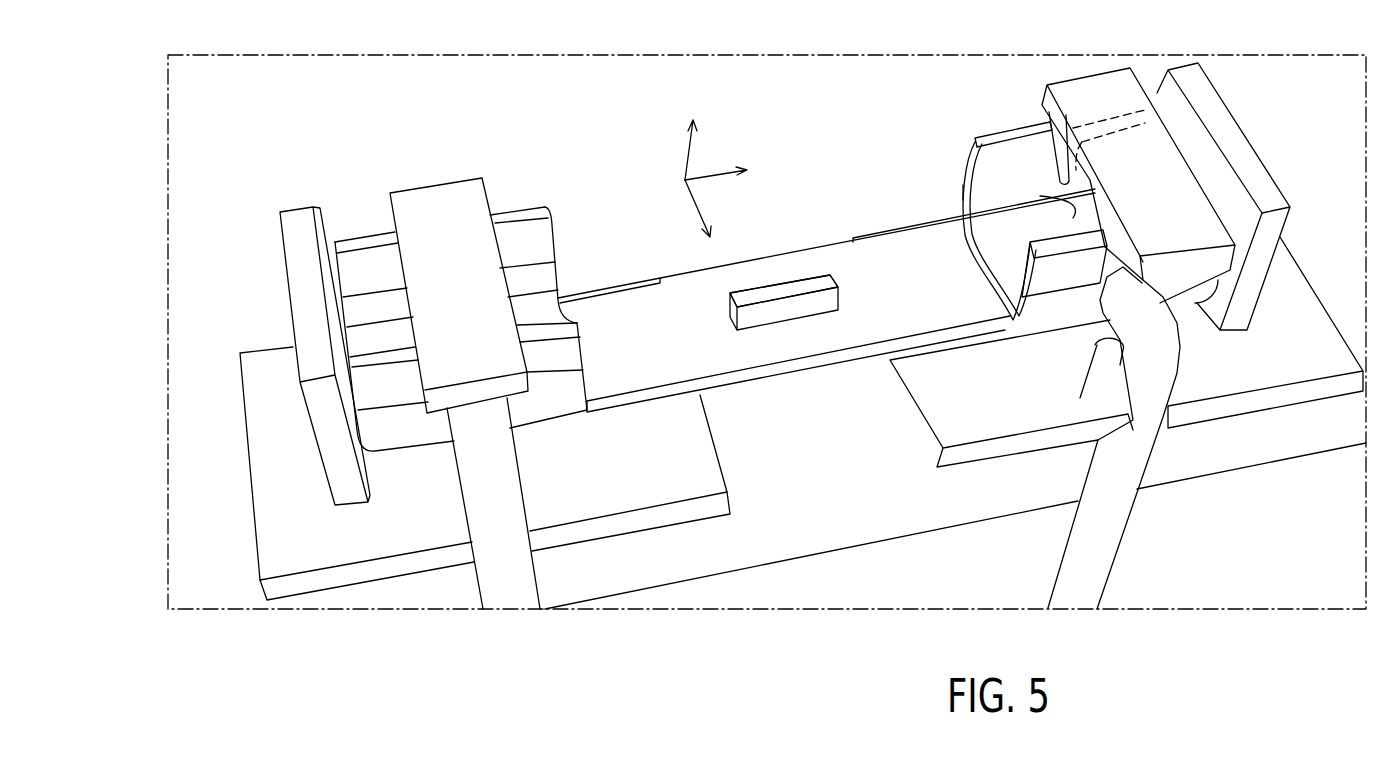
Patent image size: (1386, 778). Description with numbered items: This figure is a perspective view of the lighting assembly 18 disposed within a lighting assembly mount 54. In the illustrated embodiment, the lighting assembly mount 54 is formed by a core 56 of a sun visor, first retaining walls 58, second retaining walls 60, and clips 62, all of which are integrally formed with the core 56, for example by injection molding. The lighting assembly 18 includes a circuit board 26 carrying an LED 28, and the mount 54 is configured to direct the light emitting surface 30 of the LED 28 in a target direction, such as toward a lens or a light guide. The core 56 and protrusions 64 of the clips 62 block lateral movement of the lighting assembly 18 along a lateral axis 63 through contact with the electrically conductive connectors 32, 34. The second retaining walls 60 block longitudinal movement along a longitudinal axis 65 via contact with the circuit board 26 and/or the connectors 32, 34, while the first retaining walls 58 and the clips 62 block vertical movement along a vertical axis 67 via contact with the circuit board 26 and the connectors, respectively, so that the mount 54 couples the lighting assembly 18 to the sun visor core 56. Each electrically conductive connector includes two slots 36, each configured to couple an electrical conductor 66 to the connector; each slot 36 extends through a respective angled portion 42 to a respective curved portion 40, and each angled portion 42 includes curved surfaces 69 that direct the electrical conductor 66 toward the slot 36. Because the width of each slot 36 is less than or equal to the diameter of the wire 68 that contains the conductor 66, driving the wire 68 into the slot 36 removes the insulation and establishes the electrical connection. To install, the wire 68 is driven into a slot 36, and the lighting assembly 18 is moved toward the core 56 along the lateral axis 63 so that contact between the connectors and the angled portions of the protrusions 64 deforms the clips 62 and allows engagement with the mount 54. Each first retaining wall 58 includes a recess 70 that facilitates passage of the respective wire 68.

The lighting assembly 18 is at (797, 170).
The circuit board 26 is at (777, 373).
The LED 28 is at (810, 307).
The light emitting surface 30 is at (760, 293).
The electrically conductive connector 32 is at (553, 243).
The electrically conductive connector 34 is at (967, 175).
The slot 36 is at (1060, 172).
The curved portion 40 is at (960, 198).
The angled portion 42 is at (973, 140).
The lighting assembly mount 54 is at (813, 502).
The core 56 is at (295, 153).
The first retaining wall 58 is at (627, 497).
The second retaining wall 60 is at (297, 278).
The clip 62 is at (473, 198).
The lateral axis 63 is at (697, 203).
The protrusion 64 is at (1140, 256).
The longitudinal axis 65 is at (713, 170).
The electrical conductor 66 is at (1040, 196).
The vertical axis 67 is at (688, 152).
The wire 68 is at (1102, 567).
The curved surface 69 is at (1083, 175).
The recess 70 is at (1107, 367).